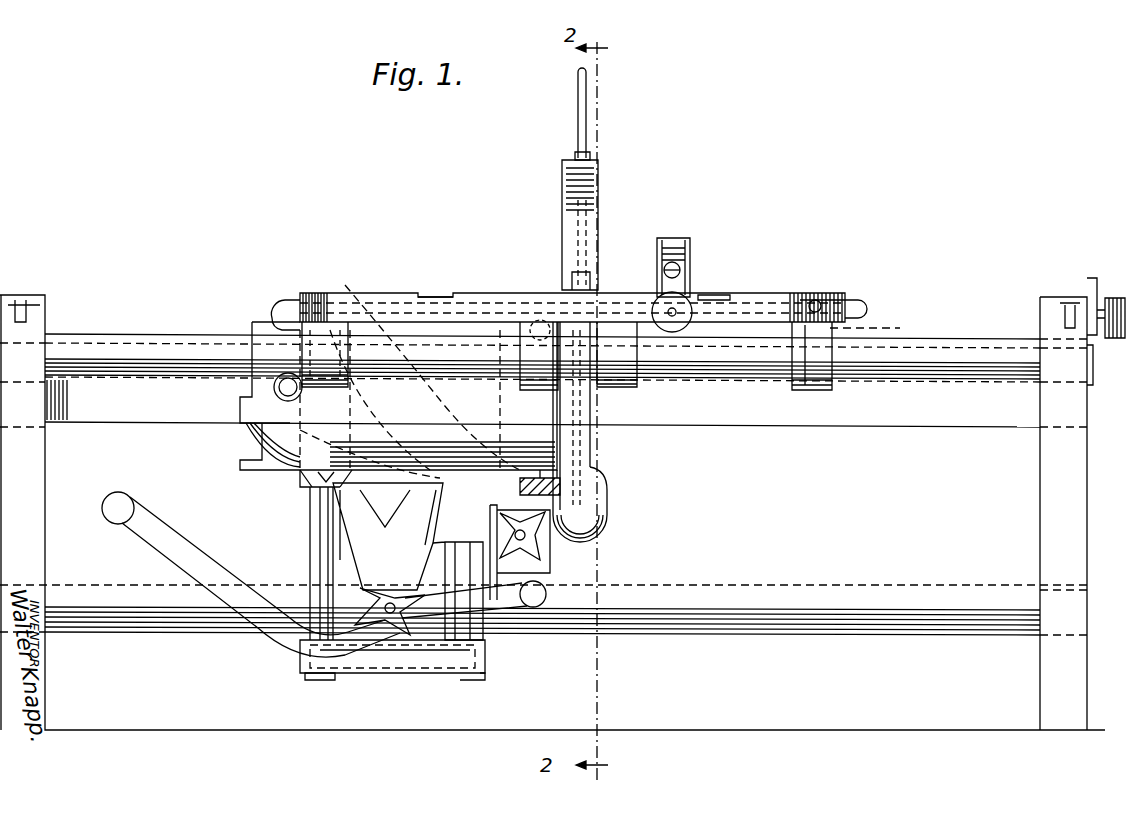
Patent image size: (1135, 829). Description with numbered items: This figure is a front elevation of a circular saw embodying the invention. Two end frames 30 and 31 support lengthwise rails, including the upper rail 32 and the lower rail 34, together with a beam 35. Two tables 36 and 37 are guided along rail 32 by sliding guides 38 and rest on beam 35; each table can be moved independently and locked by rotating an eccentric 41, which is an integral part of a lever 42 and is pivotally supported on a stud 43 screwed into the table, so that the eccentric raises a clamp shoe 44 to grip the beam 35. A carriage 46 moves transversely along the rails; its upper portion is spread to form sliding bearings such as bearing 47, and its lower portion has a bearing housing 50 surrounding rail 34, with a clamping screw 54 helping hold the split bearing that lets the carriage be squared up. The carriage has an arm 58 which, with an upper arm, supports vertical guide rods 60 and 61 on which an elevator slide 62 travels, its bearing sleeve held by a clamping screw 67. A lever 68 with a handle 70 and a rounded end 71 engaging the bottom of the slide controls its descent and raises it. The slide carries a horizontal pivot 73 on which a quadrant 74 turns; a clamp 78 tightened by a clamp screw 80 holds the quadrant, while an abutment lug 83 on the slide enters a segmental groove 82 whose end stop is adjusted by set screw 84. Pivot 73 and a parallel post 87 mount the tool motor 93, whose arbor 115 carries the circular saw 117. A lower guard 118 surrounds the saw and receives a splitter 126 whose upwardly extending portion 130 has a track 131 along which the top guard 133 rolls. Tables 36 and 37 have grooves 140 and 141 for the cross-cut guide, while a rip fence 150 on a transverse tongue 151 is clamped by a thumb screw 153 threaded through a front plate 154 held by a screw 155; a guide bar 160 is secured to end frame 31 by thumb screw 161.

The end frame 30 is at (30, 482).
The end frame 31 is at (1045, 498).
The rail 32 is at (118, 347).
The rail 34 is at (140, 608).
The beam 35 is at (910, 412).
The table 36 is at (385, 293).
The table 37 is at (770, 312).
The sliding guide 38 is at (815, 384).
The eccentric 41 is at (822, 299).
The lever 42 is at (866, 310).
The stud 43 is at (850, 297).
The clamp shoe 44 is at (888, 326).
The carriage 46 is at (400, 665).
The sliding bearing 47 is at (268, 322).
The bearing housing 50 is at (380, 590).
The clamping screw 54 is at (378, 603).
The arm 58 is at (358, 668).
The guide rod 60 is at (312, 520).
The guide rod 61 is at (462, 572).
The elevator slide 62 is at (545, 568).
The clamping screw 67 is at (305, 478).
The lever 68 is at (170, 547).
The handle 70 is at (120, 500).
The rounded end 71 is at (535, 612).
The pivot 73 is at (520, 298).
The quadrant 74 is at (388, 536).
The clamp 78 is at (540, 536).
The clamp screw 80 is at (555, 552).
The segmental groove 82 is at (385, 400).
The abutment lug 83 is at (520, 486).
The set screw 84 is at (352, 300).
The post 87 is at (592, 440).
The tool motor 93 is at (268, 428).
The tool arbor 115 is at (640, 352).
The circular saw 117 is at (598, 478).
The lower guard 118 is at (592, 510).
The splitter 126 is at (584, 135).
The rearwardly and upwardly extending portion 130 is at (578, 100).
The track 131 is at (590, 118).
The top guard 133 is at (592, 236).
The groove 140 is at (432, 296).
The groove 141 is at (715, 295).
The rip fence 150 is at (672, 250).
The transverse tongue 151 is at (730, 295).
The thumb screw 153 is at (658, 298).
The front plate 154 is at (678, 302).
The screw 155 is at (688, 285).
The guide bar 160 is at (1088, 283).
The thumb screw 161 is at (1108, 305).